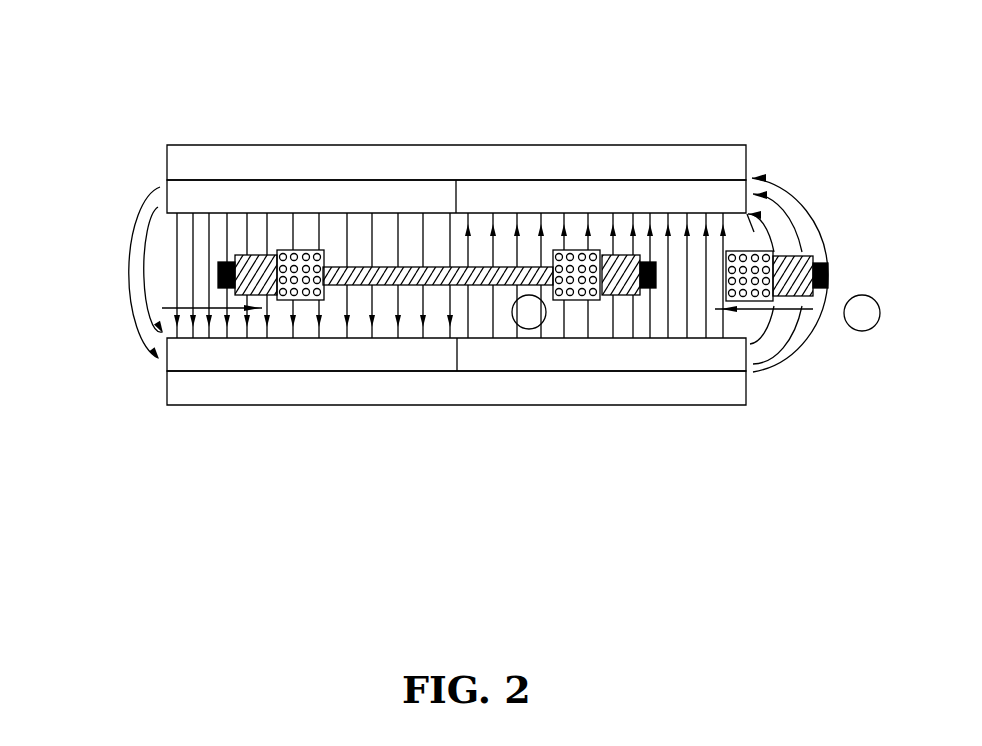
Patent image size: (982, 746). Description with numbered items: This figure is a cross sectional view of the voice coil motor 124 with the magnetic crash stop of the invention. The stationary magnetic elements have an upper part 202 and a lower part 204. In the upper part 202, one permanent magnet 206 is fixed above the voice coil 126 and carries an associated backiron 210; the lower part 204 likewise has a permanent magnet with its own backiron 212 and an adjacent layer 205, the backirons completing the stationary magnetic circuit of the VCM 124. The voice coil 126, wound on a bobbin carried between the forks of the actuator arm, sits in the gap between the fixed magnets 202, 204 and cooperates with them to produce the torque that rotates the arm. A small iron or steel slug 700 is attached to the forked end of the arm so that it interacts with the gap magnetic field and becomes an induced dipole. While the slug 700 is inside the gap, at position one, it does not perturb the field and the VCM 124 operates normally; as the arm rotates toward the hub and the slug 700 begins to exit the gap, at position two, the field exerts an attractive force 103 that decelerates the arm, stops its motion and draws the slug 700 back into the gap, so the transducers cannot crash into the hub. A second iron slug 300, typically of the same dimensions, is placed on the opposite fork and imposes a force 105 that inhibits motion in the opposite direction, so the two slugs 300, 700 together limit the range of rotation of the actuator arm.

The voice coil motor 124 is at (783, 72).
The upper part of fixed magnetic elements 202 is at (133, 198).
The backiron 210 is at (408, 165).
The permanent magnet 206 is at (164, 188).
The lower part of fixed magnetic elements 204 is at (120, 372).
The lower magnet 205 is at (163, 372).
The backiron 212 is at (417, 390).
The second iron slug 300 is at (218, 275).
The voice coil 126 is at (290, 250).
The iron or steel slug 700 is at (653, 262).
The force 105 is at (163, 308).
The force 103 is at (785, 309).